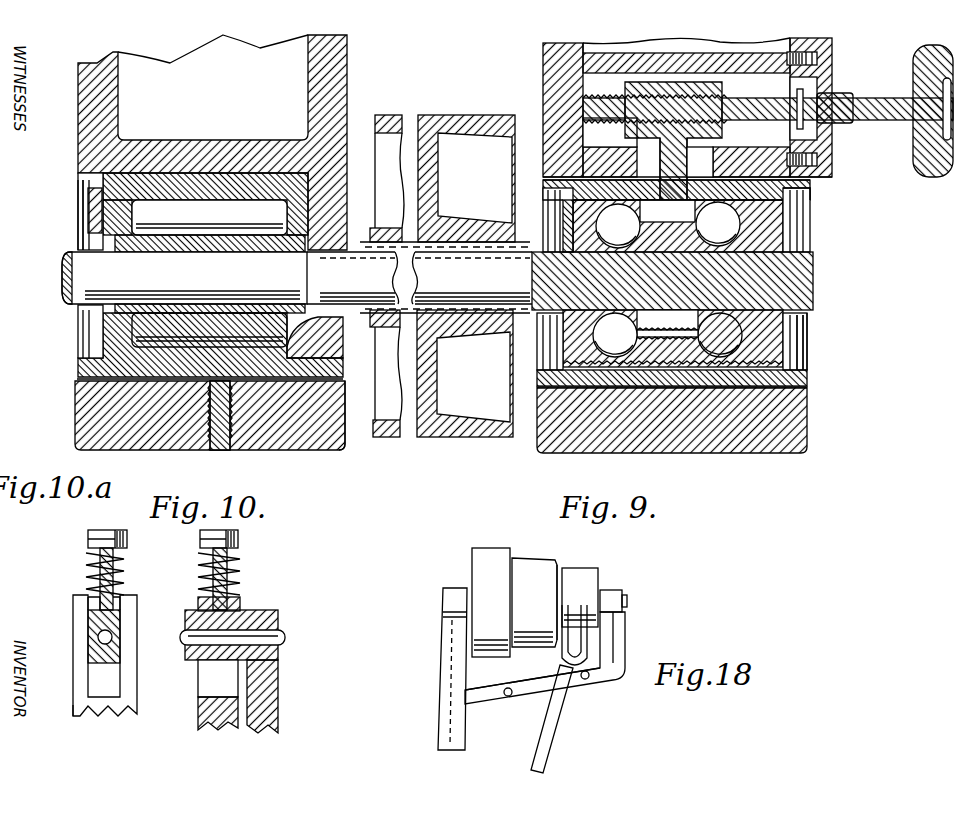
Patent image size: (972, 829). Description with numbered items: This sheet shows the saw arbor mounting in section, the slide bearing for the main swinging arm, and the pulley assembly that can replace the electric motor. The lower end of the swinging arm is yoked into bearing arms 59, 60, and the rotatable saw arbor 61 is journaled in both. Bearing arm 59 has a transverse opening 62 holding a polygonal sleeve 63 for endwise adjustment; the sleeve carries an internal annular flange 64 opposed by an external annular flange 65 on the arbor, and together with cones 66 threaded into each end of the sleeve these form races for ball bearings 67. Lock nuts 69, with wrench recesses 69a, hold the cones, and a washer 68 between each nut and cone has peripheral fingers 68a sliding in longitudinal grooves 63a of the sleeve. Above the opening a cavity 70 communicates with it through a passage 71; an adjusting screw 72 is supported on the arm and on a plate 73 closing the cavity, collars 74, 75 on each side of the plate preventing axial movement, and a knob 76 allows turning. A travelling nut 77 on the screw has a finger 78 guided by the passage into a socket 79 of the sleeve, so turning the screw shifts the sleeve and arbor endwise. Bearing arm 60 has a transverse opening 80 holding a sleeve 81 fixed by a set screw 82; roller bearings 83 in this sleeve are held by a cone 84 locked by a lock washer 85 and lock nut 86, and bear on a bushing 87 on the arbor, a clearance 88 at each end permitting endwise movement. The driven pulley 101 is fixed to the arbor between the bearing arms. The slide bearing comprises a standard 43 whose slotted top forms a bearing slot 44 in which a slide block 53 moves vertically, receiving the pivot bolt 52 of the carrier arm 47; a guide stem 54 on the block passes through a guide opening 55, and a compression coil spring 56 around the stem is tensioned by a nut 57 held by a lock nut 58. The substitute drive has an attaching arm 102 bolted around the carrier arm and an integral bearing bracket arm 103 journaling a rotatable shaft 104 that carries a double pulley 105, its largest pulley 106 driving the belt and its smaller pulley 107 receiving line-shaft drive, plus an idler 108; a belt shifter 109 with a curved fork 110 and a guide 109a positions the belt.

In FIG. 10a, the standard 43 is at (73, 707).
In FIG. 10, the standard 43 is at (200, 712).
In FIG. 10a, the bearing slot 44 is at (90, 678).
In FIG. 10, the bearing slot 44 is at (210, 678).
In FIG. 10, the carrier arm 47 is at (285, 690).
In FIG. 10, the pivot bolt 52 is at (265, 635).
In FIG. 10a, the slide block 53 is at (88, 622).
In FIG. 10, the slide block 53 is at (190, 620).
In FIG. 10a, the guide stem 54 is at (112, 592).
In FIG. 10, the guide stem 54 is at (228, 568).
In FIG. 10a, the guide opening 55 is at (96, 605).
In FIG. 10, the guide opening 55 is at (240, 600).
In FIG. 10a, the compression coil spring 56 is at (86, 571).
In FIG. 10, the compression coil spring 56 is at (240, 588).
In FIG. 10a, the nut 57 is at (90, 546).
In FIG. 10, the nut 57 is at (238, 548).
In FIG. 10a, the lock nut 58 is at (90, 530).
In FIG. 10, the lock nut 58 is at (238, 536).
In FIG. 9, the bearing arm 59 is at (542, 68).
In FIG. 9, the bearing arm 60 is at (347, 62).
In FIG. 9, the saw arbor 61 is at (813, 284).
In FIG. 9, the transverse opening 62 is at (753, 392).
In FIG. 9, the sleeve 63 is at (660, 372).
In FIG. 9, the longitudinal grooves 63a is at (800, 195).
In FIG. 9, the internal annular flange 64 is at (667, 290).
In FIG. 9, the external annular flange 65 is at (683, 328).
In FIG. 9, the cones 66 is at (805, 222).
In FIG. 9, the ball bearings 67 is at (607, 222).
In FIG. 9, the washer 68 is at (810, 322).
In FIG. 9, the peripheral fingers 68a is at (800, 381).
In FIG. 9, the lock nuts 69 is at (810, 347).
In FIG. 9, the recesses 69a is at (812, 333).
In FIG. 9, the cavity 70 is at (768, 99).
In FIG. 9, the passage 71 is at (686, 171).
In FIG. 9, the adjusting screw 72 is at (678, 130).
In FIG. 9, the plate 73 is at (838, 80).
In FIG. 9, the collar 74 is at (843, 127).
In FIG. 9, the collar 75 is at (792, 117).
In FIG. 9, the knob 76 is at (903, 98).
In FIG. 9, the travelling nut 77 is at (672, 92).
In FIG. 9, the finger 78 is at (652, 163).
In FIG. 9, the socket 79 is at (718, 224).
In FIG. 9, the transverse opening 80 is at (287, 382).
In FIG. 9, the sleeve 81 is at (173, 373).
In FIG. 9, the set screw 82 is at (222, 448).
In FIG. 9, the roller bearings 83 is at (212, 205).
In FIG. 9, the cone 84 is at (128, 205).
In FIG. 9, the lock washer 85 is at (78, 212).
In FIG. 9, the lock nut 86 is at (78, 332).
In FIG. 9, the bushing 87 is at (297, 278).
In FIG. 9, the clearance 88 is at (78, 240).
In FIG. 9, the driven pulley 101 is at (432, 440).
In FIG. 18, the attaching arm 102 is at (460, 723).
In FIG. 18, the bearing bracket arm 103 is at (595, 679).
In FIG. 18, the rotatable shaft 104 is at (628, 600).
In FIG. 18, the double pulley 105 is at (521, 555).
In FIG. 18, the largest pulley 106 is at (490, 552).
In FIG. 18, the smaller pulley 107 is at (545, 565).
In FIG. 18, the idler 108 is at (580, 571).
In FIG. 18, the belt shifter 109 is at (553, 744).
In FIG. 18, the guide 109a is at (533, 697).
In FIG. 18, the curved fork 110 is at (590, 650).